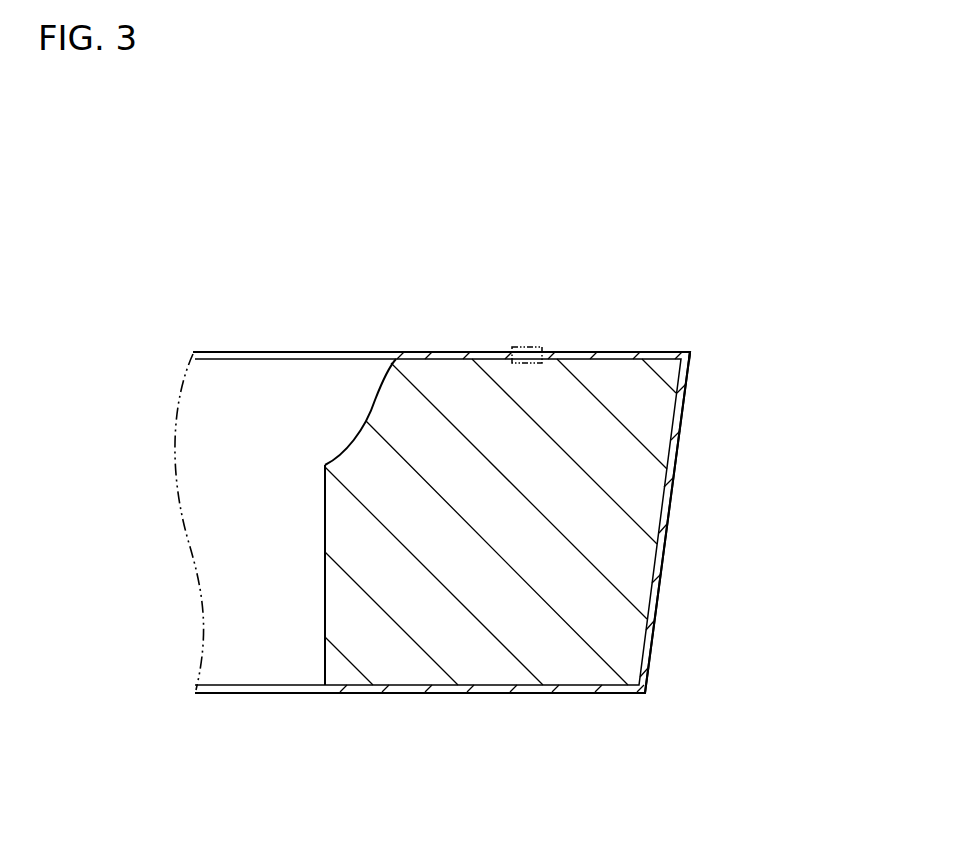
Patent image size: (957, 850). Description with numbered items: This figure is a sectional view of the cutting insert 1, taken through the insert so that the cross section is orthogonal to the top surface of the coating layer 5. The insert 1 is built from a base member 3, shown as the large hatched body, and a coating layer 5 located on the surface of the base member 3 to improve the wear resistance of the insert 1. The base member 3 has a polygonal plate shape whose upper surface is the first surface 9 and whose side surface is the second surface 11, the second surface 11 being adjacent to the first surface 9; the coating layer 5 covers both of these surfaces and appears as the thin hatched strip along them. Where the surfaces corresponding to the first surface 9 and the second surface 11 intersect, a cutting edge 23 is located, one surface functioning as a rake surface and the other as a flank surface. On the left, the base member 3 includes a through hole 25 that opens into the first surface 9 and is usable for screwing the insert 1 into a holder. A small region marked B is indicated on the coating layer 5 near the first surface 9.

The insert 1 is at (243, 268).
The base member 3 is at (500, 595).
The coating layer 5 is at (655, 352).
The first surface 9 is at (435, 352).
The second surface 11 is at (658, 562).
The cutting edge 23 is at (692, 353).
The through hole 25 is at (325, 582).
The region B is at (533, 347).